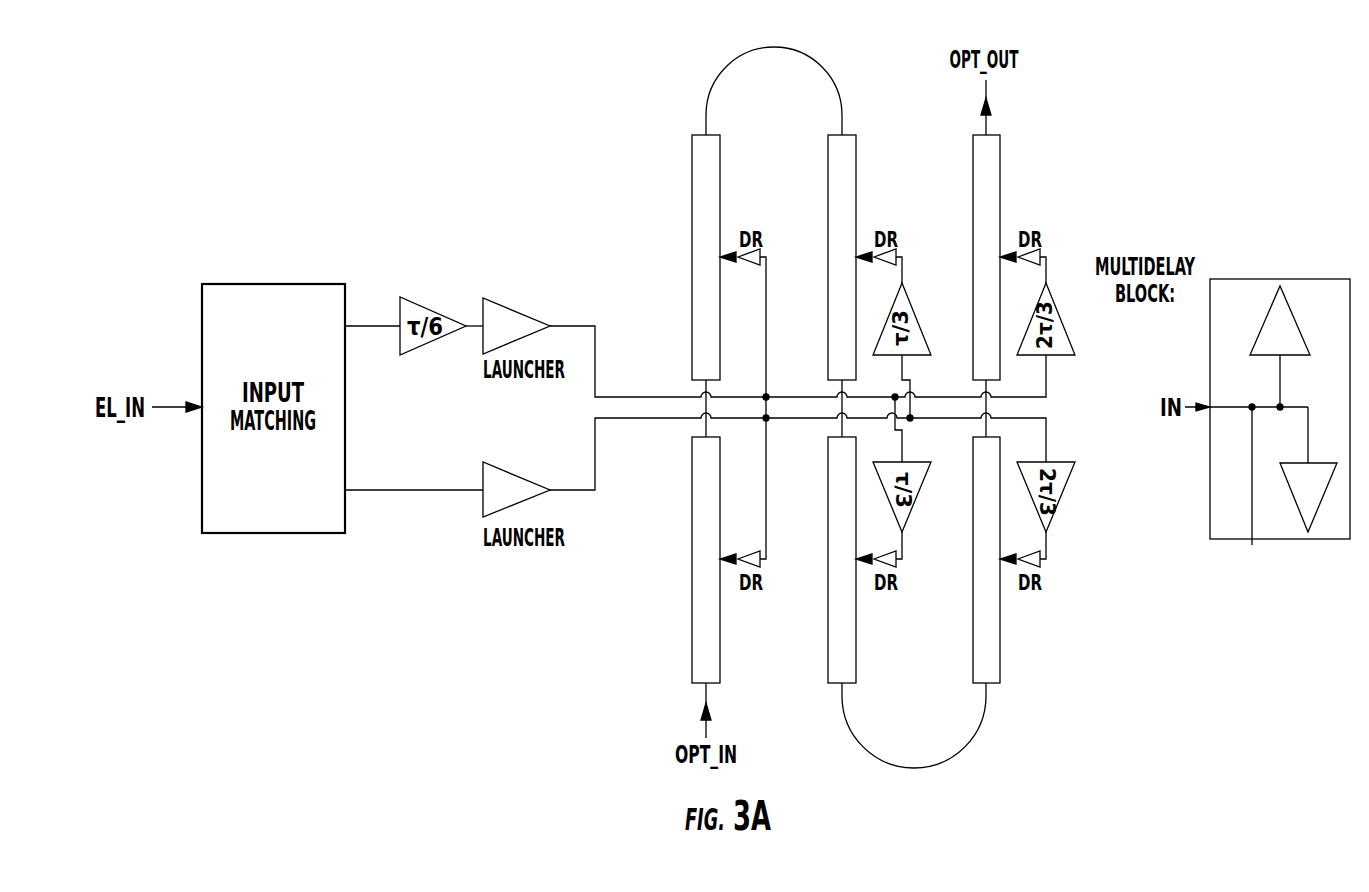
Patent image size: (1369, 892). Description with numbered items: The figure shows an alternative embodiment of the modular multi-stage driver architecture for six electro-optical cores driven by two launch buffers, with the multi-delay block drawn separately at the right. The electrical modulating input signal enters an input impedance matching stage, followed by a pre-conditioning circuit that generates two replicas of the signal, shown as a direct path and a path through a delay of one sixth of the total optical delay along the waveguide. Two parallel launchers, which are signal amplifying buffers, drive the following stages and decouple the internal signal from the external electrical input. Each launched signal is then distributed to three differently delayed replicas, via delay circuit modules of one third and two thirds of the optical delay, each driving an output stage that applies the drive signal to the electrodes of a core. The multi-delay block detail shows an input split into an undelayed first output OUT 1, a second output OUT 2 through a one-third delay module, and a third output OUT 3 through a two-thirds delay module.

The OUT 1 output (undelayed path) of multidelay block 1 is at (1252, 545).
The OUT 2 output (tau/3 delay path) of multidelay block 2 is at (1280, 286).
The OUT 3 output (2tau/3 delay path) of multidelay block 3 is at (1308, 532).